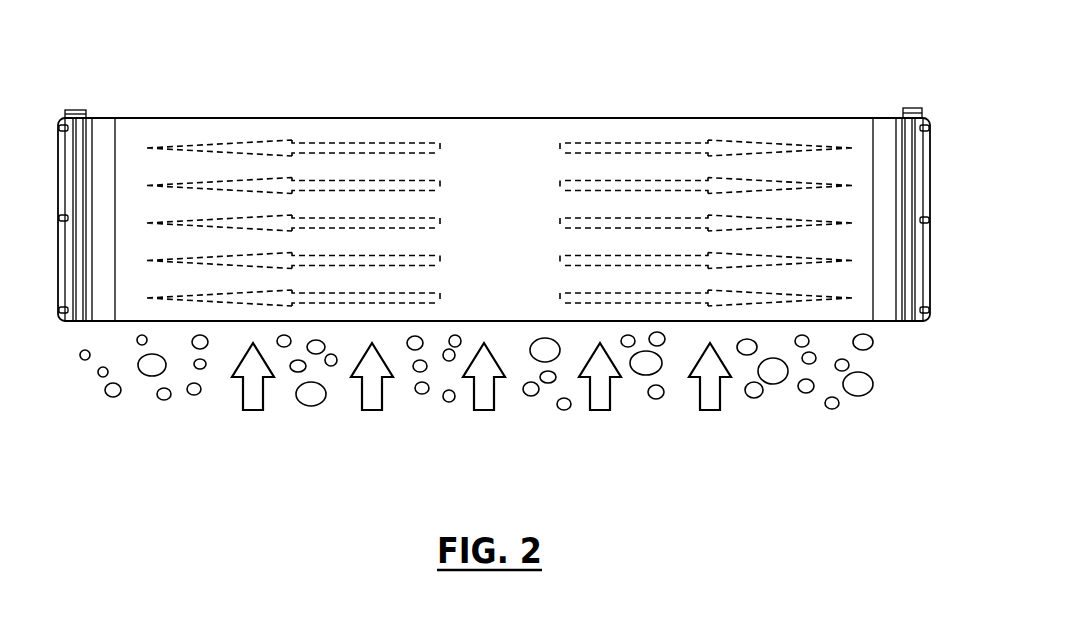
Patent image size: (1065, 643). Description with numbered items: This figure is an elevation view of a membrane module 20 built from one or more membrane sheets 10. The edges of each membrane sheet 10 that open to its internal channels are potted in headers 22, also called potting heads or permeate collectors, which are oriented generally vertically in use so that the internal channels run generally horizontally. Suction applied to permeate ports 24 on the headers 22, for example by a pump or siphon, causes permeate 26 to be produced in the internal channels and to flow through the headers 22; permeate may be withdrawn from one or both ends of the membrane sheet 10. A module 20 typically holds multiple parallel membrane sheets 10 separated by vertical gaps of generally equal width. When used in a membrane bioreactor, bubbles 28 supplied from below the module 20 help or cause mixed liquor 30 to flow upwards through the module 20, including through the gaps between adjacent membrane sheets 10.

The membrane sheet 10 is at (812, 130).
The membrane module 20 is at (172, 442).
The header 22 is at (110, 316).
The permeate port 24 is at (83, 109).
The permeate 26 is at (612, 146).
The bubbles 28 is at (418, 394).
The mixed liquor 30 is at (603, 403).